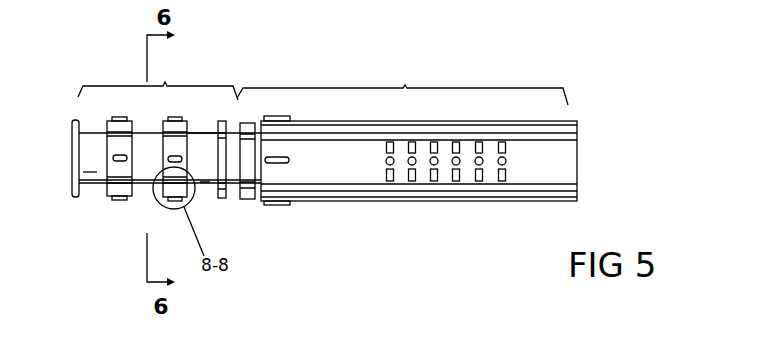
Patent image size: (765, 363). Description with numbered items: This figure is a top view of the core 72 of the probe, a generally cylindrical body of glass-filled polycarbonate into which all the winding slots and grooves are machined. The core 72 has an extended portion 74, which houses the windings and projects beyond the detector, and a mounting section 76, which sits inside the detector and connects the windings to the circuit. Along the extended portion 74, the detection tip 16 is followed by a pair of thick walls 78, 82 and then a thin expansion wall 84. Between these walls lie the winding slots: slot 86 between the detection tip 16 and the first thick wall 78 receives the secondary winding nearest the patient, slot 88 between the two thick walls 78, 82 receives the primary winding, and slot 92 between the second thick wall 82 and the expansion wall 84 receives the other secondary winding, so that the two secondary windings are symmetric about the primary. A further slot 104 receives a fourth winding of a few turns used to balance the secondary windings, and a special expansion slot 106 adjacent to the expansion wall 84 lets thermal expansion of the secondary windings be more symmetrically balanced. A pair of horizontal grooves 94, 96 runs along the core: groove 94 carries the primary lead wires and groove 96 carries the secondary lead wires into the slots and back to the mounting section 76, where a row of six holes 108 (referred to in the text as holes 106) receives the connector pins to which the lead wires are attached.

The detection tip 16 is at (72, 156).
The core 72 is at (495, 207).
The extended portion 74 is at (158, 79).
The mounting section 76 is at (402, 83).
The thick wall 78 is at (125, 119).
The thick wall 82 is at (176, 119).
The thin expansion wall 84 is at (221, 121).
The slot 86 is at (92, 174).
The slot 88 is at (174, 197).
The slot 92 is at (212, 178).
The horizontal groove 94 is at (142, 168).
The horizontal groove 96 is at (188, 128).
The slot 104 is at (262, 197).
The expansion slot 106 is at (234, 190).
The holes 108 is at (436, 166).